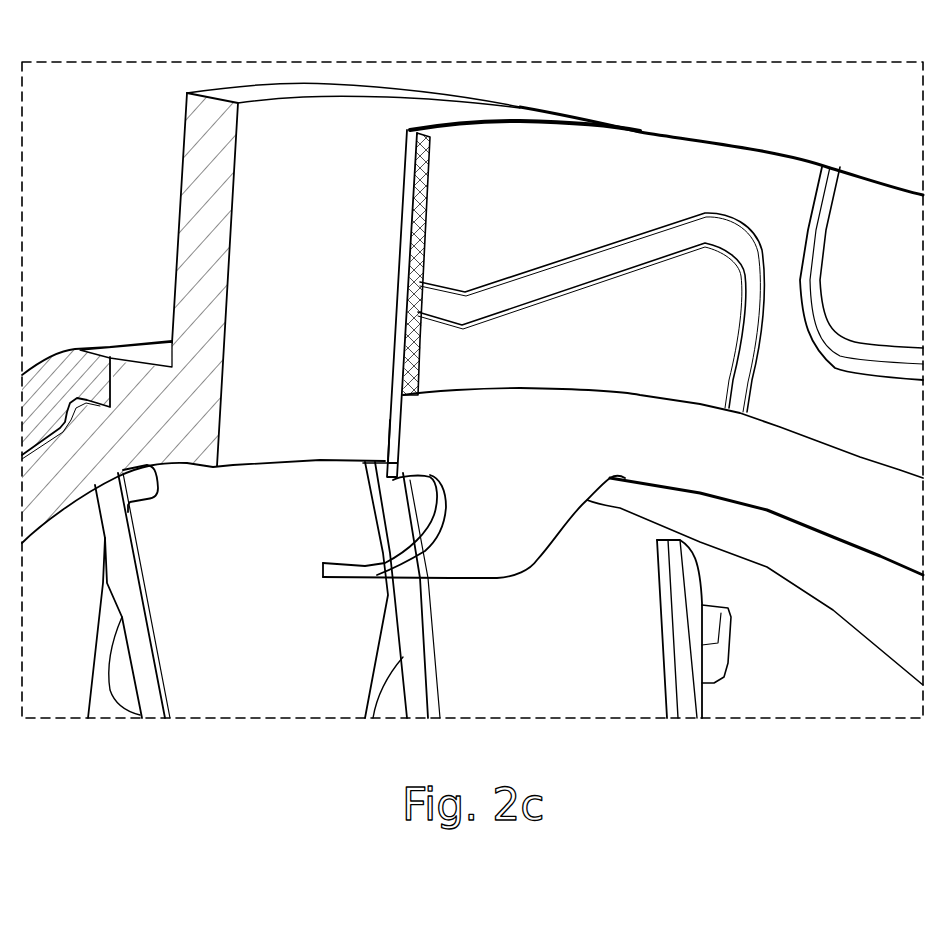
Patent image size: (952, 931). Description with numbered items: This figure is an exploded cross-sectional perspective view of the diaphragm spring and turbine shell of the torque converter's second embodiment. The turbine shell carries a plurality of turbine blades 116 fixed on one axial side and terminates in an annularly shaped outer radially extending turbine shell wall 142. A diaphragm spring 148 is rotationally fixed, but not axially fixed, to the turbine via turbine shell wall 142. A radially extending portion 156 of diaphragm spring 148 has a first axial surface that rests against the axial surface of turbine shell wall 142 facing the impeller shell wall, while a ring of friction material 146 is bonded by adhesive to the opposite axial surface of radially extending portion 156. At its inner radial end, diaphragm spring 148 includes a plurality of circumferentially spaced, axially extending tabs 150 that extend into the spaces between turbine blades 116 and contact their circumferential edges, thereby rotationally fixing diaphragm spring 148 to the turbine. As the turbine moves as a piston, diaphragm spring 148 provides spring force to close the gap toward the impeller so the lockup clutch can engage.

The turbine blades 116 is at (425, 693).
The outer radially extending turbine shell wall 142 is at (195, 205).
The friction material 146 is at (729, 163).
The diaphragm spring 148 is at (378, 420).
The axially extending tabs 150 is at (492, 547).
The radially extending portion 156 is at (665, 440).